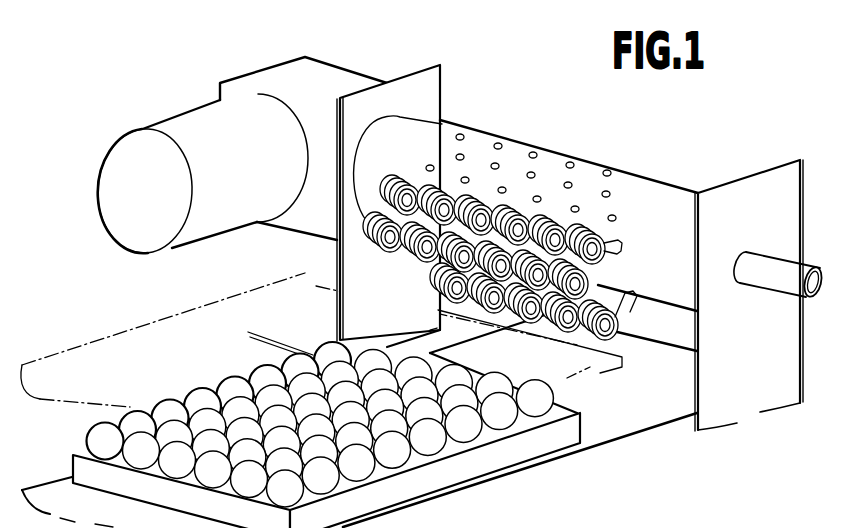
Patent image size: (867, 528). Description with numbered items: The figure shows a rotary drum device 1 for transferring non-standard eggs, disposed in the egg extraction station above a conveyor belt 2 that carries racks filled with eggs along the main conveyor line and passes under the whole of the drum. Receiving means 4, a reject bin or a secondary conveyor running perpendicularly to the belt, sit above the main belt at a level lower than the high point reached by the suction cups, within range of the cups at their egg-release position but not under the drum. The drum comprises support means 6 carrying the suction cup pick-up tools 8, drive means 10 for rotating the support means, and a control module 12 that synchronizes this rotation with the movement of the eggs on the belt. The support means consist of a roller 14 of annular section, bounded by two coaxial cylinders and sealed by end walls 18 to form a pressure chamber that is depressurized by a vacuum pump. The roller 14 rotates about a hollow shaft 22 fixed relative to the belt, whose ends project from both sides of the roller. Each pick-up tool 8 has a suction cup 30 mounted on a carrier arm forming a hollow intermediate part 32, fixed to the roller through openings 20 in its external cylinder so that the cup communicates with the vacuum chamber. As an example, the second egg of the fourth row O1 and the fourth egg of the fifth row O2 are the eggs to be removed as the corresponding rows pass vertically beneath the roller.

The device for transferring non-standard eggs 1 is at (440, 192).
The conveyor belt 2 is at (603, 423).
The receiving means 4 is at (110, 337).
The means supporting the suction cup pick-up tools 6 is at (628, 168).
The suction cup pick-up tools 8 is at (630, 330).
The drive means 10 is at (272, 80).
The control module 12 is at (172, 125).
The roller 14 is at (483, 155).
The end walls 18 is at (790, 185).
The openings 20 is at (533, 151).
The hollow shaft 22 is at (777, 262).
The suction cup 30 is at (515, 273).
The hollow intermediate part 32 is at (637, 297).
The second egg from the fourth row O1 is at (306, 388).
The fourth egg from the fifth row O2 is at (348, 414).